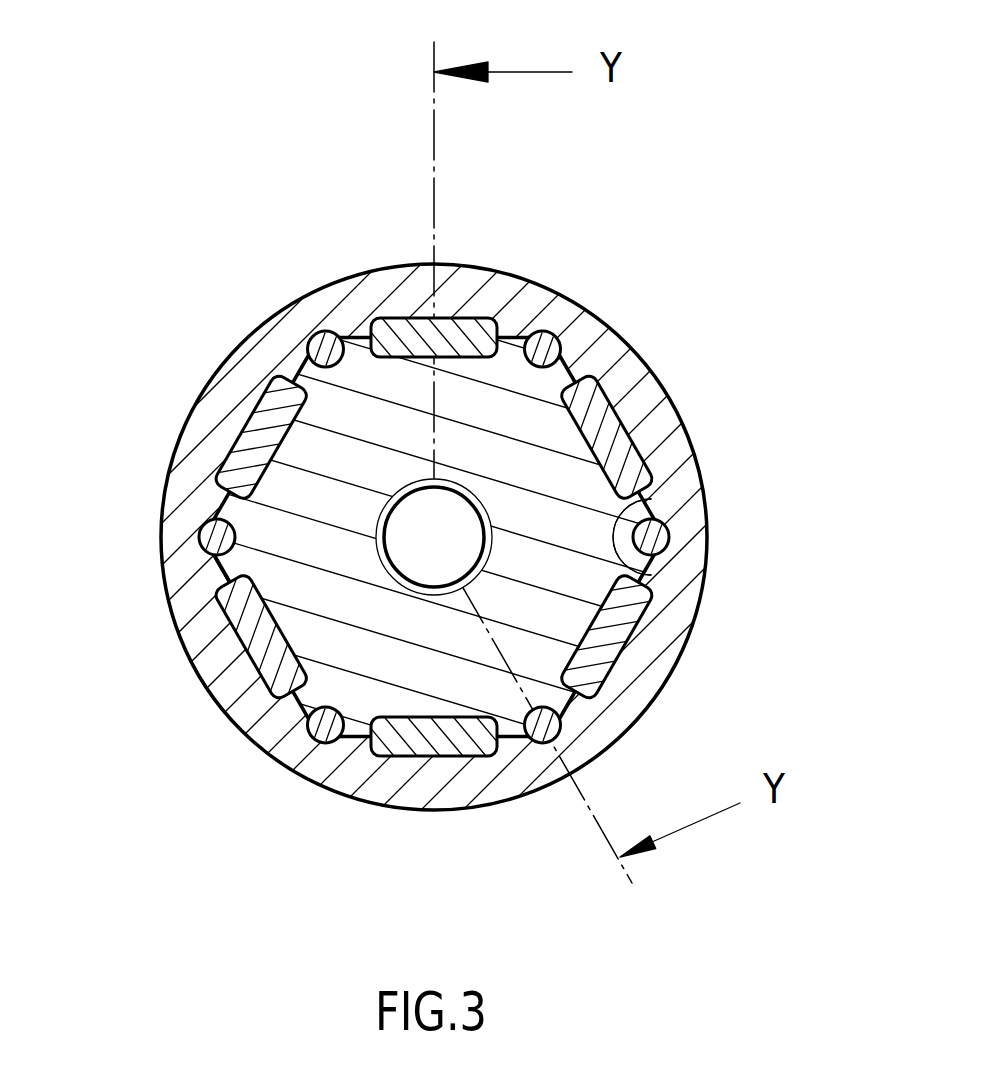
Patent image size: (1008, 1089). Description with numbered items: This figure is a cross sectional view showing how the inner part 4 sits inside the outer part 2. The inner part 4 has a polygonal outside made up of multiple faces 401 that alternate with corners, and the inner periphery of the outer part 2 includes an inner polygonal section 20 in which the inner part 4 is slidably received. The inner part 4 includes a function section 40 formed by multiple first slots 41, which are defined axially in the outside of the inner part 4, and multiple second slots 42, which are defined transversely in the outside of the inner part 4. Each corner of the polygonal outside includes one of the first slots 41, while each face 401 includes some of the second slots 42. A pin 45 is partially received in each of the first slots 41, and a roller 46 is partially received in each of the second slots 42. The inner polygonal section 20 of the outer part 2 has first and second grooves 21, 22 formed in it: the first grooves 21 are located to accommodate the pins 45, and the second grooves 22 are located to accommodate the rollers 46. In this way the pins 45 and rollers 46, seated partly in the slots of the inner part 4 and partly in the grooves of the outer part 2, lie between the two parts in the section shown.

The outer part 2 is at (705, 434).
The inner part 4 is at (553, 611).
The inner polygonal section 20 is at (650, 567).
The function section 40 is at (632, 537).
The first grooves 21 is at (205, 528).
The second grooves 22 is at (238, 583).
The first slots 41 is at (320, 742).
The second slots 42 is at (258, 670).
The pin 45 is at (312, 337).
The roller 46 is at (413, 335).
The faces 401 is at (292, 381).